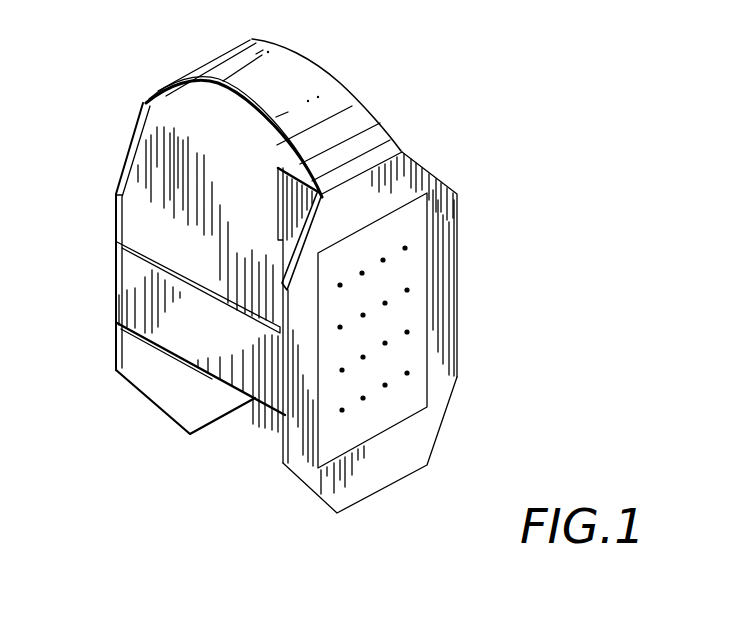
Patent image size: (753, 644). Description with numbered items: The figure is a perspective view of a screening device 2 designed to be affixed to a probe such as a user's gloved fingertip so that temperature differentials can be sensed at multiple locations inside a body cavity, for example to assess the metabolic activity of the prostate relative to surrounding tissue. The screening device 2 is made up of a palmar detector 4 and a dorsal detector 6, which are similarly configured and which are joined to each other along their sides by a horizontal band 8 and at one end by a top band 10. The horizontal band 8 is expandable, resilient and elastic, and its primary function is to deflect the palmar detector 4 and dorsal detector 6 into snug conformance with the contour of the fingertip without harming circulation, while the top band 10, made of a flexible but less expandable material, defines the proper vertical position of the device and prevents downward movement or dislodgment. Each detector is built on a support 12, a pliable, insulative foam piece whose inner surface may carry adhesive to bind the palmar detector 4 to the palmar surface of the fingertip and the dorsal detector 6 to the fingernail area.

The screening device 2 is at (392, 93).
The palmar detector 4 is at (457, 320).
The dorsal detector 6 is at (116, 212).
The horizontal band 8 is at (293, 162).
The top band 10 is at (270, 40).
The support 12 is at (413, 448).